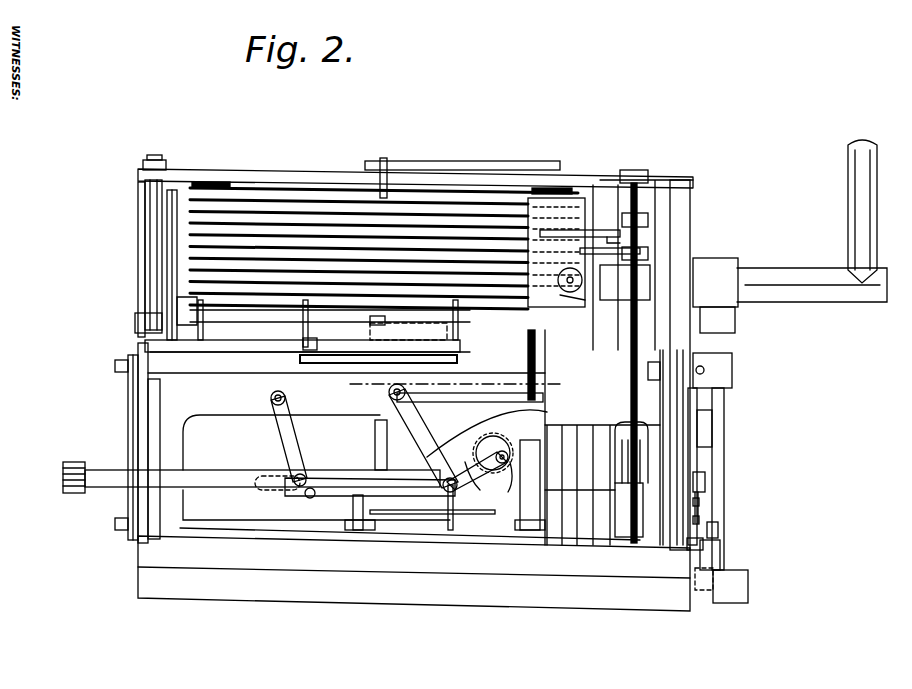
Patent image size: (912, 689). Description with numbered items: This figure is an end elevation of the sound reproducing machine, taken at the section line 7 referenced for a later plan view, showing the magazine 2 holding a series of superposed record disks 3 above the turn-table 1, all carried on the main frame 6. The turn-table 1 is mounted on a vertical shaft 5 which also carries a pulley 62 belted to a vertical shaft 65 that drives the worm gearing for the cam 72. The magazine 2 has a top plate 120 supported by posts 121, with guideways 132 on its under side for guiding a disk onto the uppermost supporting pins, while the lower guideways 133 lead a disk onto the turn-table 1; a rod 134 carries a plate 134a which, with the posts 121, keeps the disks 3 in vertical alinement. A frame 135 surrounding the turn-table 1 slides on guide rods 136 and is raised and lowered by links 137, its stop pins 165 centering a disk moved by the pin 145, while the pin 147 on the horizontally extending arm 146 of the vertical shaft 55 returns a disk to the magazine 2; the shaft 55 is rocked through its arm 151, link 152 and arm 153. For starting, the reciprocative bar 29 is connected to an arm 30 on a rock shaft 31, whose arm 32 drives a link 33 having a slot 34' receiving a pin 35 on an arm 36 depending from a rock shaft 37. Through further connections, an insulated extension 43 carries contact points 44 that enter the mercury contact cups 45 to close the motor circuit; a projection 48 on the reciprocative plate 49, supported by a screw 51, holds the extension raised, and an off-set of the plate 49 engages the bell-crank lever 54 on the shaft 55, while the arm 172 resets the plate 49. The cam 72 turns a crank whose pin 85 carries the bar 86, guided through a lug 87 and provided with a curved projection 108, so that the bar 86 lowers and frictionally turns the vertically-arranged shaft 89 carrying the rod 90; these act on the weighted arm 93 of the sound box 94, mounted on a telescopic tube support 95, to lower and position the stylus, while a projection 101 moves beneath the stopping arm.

The turn-table 1 is at (262, 335).
The magazine 2 is at (142, 212).
The record disks 3 is at (318, 188).
The vertical shaft 5 is at (374, 428).
The main frame 6 is at (414, 492).
The guide line 7 is at (352, 385).
The reciprocative bar 29 is at (62, 478).
The arm 30 is at (410, 420).
The rock shaft 31 is at (389, 392).
The arm 32 is at (405, 444).
The link 33 is at (330, 496).
The slot 34' is at (266, 497).
The pin 35 is at (292, 470).
The arm 36 is at (282, 434).
The rock shaft 37 is at (271, 400).
The insulated extension 43 is at (720, 530).
The contact points 44 is at (712, 560).
The mercury contact cups 45 is at (718, 590).
The projection 48 is at (700, 520).
The reciprocative plate 49 is at (700, 502).
The screw 51 is at (705, 480).
The bell-crank lever 54 is at (618, 505).
The vertical shaft 55 is at (660, 318).
The pulley 62 is at (302, 362).
The vertical shaft 65 is at (450, 525).
The cam 72 is at (487, 441).
The projecting pin 85 is at (530, 532).
The bar 86 is at (488, 483).
The lug 87 is at (356, 530).
The vertically-arranged shaft 89 is at (547, 388).
The rod 90 is at (585, 410).
The weighted arm 93 is at (650, 248).
The sound box 94 is at (640, 236).
The telescopic tube support 95 is at (660, 272).
The projection 101 is at (400, 515).
The curved projection 108 is at (528, 388).
The top plate 120 is at (293, 172).
The posts 121 is at (146, 190).
The guideways 132 is at (205, 182).
The guideways 133 is at (180, 302).
The rod 134 is at (600, 180).
The plate 134a is at (558, 200).
The frame 135 is at (146, 346).
The guide rods 136 is at (170, 255).
The links 137 is at (128, 406).
The pin 145 is at (384, 331).
The horizontally extending arm 146 is at (418, 163).
The pin 147 is at (382, 160).
The arm 151 is at (628, 432).
The link 152 is at (712, 422).
The arm 153 is at (724, 452).
The stop pins 165 is at (326, 325).
The arm 172 is at (700, 496).